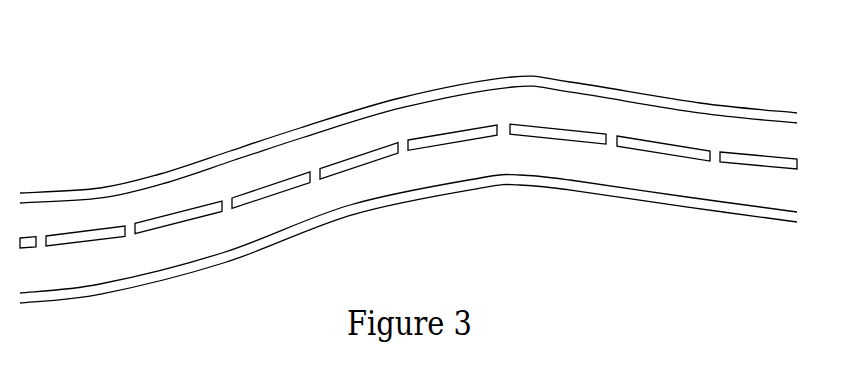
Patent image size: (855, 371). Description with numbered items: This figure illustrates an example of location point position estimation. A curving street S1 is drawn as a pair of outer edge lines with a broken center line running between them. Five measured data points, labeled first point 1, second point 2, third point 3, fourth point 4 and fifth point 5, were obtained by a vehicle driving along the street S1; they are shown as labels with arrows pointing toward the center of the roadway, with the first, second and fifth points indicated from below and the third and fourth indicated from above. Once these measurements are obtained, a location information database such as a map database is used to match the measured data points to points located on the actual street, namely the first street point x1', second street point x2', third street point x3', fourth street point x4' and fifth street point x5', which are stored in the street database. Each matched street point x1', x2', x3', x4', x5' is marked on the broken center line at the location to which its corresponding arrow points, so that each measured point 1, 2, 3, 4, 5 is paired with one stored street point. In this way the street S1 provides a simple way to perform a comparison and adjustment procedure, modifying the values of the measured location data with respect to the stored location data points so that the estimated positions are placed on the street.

The data point x1 1 is at (125, 255).
The data point x2 2 is at (222, 225).
The data point x3 3 is at (361, 139).
The data point x4 4 is at (503, 110).
The data point x5 5 is at (674, 170).
The street point x1' is at (96, 237).
The street point x2' is at (190, 214).
The street point x3' is at (359, 161).
The street point x4' is at (512, 132).
The street point x5' is at (663, 154).
The street S1 is at (408, 189).